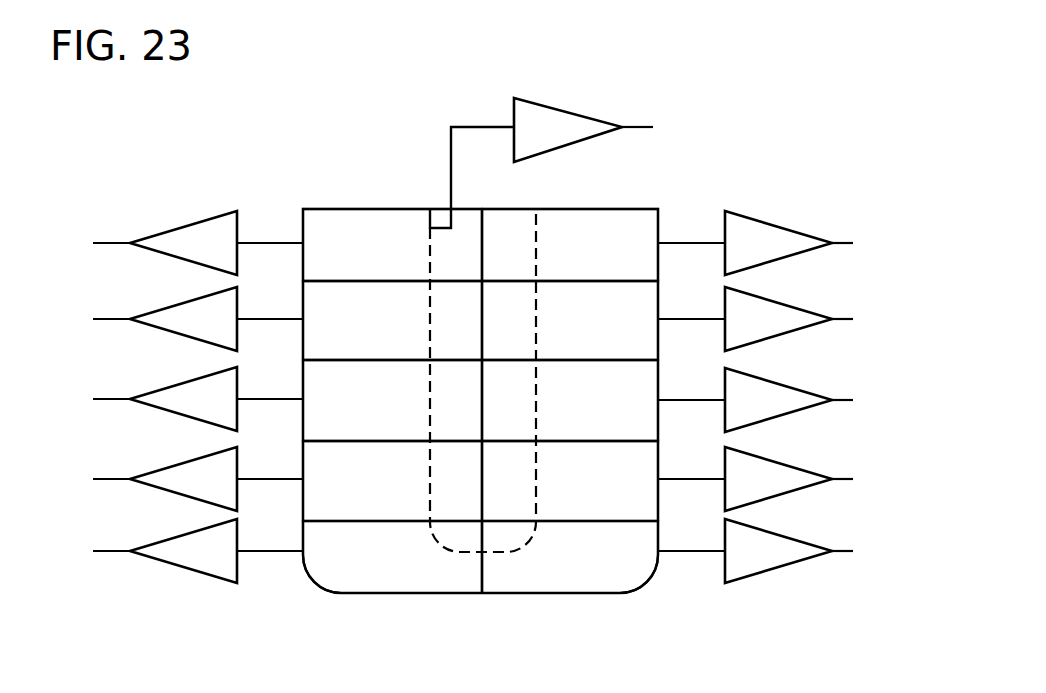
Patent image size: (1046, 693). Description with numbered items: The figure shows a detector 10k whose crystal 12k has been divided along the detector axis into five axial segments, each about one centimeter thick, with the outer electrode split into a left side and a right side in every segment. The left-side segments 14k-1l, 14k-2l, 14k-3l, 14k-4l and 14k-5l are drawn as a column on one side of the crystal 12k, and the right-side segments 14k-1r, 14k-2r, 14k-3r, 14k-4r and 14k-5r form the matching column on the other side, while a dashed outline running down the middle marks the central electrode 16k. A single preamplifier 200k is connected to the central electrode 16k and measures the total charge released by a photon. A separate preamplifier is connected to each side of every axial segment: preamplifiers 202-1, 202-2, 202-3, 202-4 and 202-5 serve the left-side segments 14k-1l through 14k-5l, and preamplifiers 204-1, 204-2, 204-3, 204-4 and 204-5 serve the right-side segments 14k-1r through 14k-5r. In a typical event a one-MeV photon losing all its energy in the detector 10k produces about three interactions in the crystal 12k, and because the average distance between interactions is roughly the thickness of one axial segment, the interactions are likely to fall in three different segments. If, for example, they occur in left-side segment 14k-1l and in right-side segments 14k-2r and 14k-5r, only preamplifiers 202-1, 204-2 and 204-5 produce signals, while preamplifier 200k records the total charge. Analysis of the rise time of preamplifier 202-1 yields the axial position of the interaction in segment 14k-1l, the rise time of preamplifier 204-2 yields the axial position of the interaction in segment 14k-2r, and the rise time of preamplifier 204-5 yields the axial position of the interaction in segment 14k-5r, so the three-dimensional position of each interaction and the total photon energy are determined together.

The detector 10k is at (368, 136).
The crystal 12k is at (383, 198).
The left side segment 14k-1l is at (411, 572).
The left side segment 14k-2l is at (408, 493).
The left side segment 14k-3l is at (408, 419).
The left side segment 14k-4l is at (409, 341).
The left side segment 14k-5l is at (408, 272).
The right side segment 14k-1r is at (640, 572).
The right side segment 14k-2r is at (640, 493).
The right side segment 14k-3r is at (640, 419).
The right side segment 14k-4r is at (642, 341).
The right side segment 14k-5r is at (640, 272).
The central electrode 16k is at (538, 216).
The preamplifier 200k is at (550, 112).
The preamplifier 202-1 is at (187, 533).
The preamplifier 202-2 is at (187, 461).
The preamplifier 202-3 is at (187, 381).
The preamplifier 202-4 is at (187, 301).
The preamplifier 202-5 is at (187, 225).
The preamplifier 204-1 is at (770, 532).
The preamplifier 204-2 is at (770, 461).
The preamplifier 204-3 is at (770, 380).
The preamplifier 204-4 is at (770, 299).
The preamplifier 204-5 is at (770, 223).